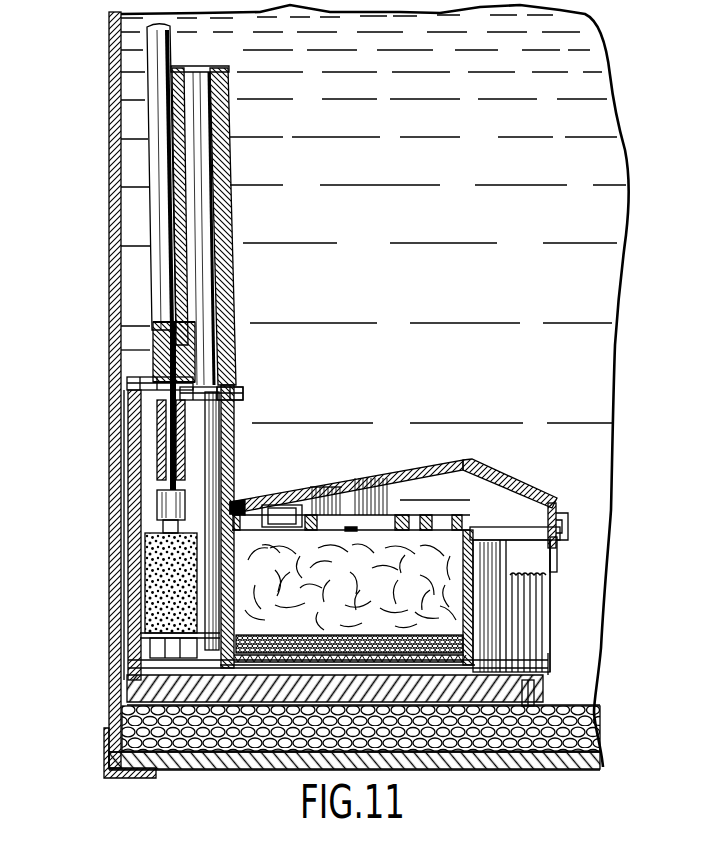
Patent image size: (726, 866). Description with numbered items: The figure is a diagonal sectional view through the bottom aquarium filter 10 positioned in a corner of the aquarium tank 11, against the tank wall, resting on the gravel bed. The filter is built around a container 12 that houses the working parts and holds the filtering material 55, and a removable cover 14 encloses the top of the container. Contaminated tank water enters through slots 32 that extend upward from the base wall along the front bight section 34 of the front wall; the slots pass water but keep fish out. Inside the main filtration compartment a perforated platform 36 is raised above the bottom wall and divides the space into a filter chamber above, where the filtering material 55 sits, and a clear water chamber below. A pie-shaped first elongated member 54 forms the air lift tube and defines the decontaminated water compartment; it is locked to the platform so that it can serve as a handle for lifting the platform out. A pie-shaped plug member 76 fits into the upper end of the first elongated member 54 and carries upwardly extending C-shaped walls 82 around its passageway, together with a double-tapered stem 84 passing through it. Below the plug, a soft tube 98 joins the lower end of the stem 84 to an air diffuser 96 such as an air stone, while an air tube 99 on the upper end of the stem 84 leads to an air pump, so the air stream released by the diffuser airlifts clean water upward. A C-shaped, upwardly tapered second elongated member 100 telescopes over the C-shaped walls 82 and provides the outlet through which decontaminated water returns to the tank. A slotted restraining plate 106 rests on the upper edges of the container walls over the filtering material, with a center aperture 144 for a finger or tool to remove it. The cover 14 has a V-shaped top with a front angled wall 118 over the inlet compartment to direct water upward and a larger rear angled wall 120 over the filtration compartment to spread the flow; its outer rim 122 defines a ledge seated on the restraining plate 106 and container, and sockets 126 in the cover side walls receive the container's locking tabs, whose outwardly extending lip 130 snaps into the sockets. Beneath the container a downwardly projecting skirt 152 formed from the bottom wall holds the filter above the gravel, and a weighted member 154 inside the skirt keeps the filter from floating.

The bottom aquarium filter 10 is at (566, 401).
The aquarium tank 11 is at (111, 212).
The container 12 is at (560, 575).
The cover 14 is at (498, 464).
The slots 32 is at (549, 600).
The front bight section 34 is at (556, 559).
The platform 36 is at (384, 640).
The first elongated member 54 is at (241, 409).
The filtering material 55 is at (558, 553).
The plug member 76 is at (145, 382).
The C-shaped walls 82 is at (226, 358).
The stem 84 is at (157, 350).
The air diffuser 96 is at (161, 560).
The tube 98 is at (159, 437).
The air tube 99 is at (150, 117).
The second elongated member 100 is at (236, 171).
The restraining plate 106 is at (520, 489).
The front angled wall 118 is at (474, 519).
The rear angled wall 120 is at (389, 478).
The outer rim 122 is at (569, 530).
The sockets 126 is at (278, 505).
The lip 130 is at (297, 507).
The center aperture 144 is at (358, 526).
The skirt 152 is at (534, 700).
The weighted member 154 is at (572, 661).